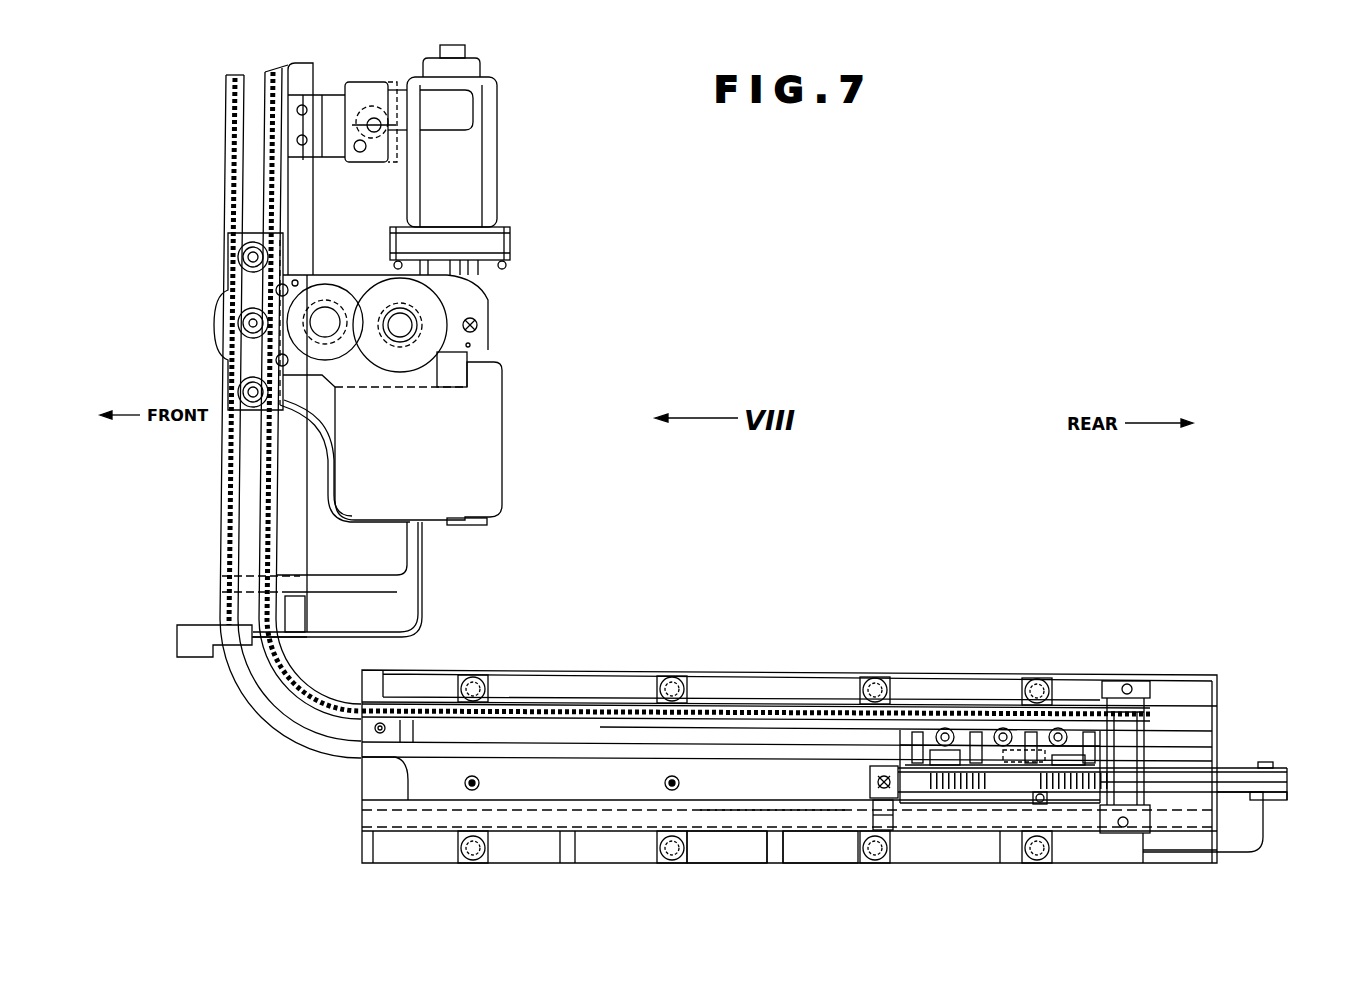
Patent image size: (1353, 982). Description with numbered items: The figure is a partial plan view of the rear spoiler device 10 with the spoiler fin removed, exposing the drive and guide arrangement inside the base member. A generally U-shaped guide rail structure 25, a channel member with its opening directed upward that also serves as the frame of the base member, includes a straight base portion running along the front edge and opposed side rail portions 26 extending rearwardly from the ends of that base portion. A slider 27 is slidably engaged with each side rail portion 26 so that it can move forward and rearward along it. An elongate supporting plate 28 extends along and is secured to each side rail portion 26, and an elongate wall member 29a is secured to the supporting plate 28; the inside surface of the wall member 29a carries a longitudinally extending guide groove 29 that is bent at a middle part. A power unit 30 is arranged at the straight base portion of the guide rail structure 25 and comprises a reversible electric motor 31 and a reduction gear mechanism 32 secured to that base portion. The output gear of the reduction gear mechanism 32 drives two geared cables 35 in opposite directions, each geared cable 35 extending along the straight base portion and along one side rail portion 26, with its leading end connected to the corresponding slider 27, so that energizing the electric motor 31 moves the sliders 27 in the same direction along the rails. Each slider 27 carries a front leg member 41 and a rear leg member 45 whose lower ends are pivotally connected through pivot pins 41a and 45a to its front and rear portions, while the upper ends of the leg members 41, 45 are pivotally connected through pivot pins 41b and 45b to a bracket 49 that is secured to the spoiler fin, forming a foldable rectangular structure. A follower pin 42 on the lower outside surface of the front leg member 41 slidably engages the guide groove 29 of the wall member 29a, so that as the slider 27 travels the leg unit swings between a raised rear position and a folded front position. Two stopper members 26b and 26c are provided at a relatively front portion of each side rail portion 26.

The rear spoiler device 10 is at (804, 318).
The U-shaped guide rail structure 25 is at (218, 554).
The side rail portion 26 is at (802, 708).
The stopper member 26b is at (480, 783).
The stopper member 26c is at (680, 783).
The slider 27 is at (990, 730).
The elongate supporting plate 28 is at (733, 850).
The guide groove 29 is at (823, 828).
The elongate wall member 29a is at (773, 808).
The power unit 30 is at (512, 330).
The reversible electric motor 31 is at (498, 150).
The reduction gear mechanism 32 is at (500, 306).
The geared cable 35 is at (313, 73).
The front leg member 41 is at (990, 802).
The pivot pin 41a is at (945, 802).
The pivot pin 41b is at (1130, 806).
The follower pin 42 is at (873, 768).
The rear leg member 45 is at (1238, 795).
The pivot pin 45a is at (1093, 806).
The pivot pin 45b is at (1266, 762).
The bracket 49 is at (1197, 840).